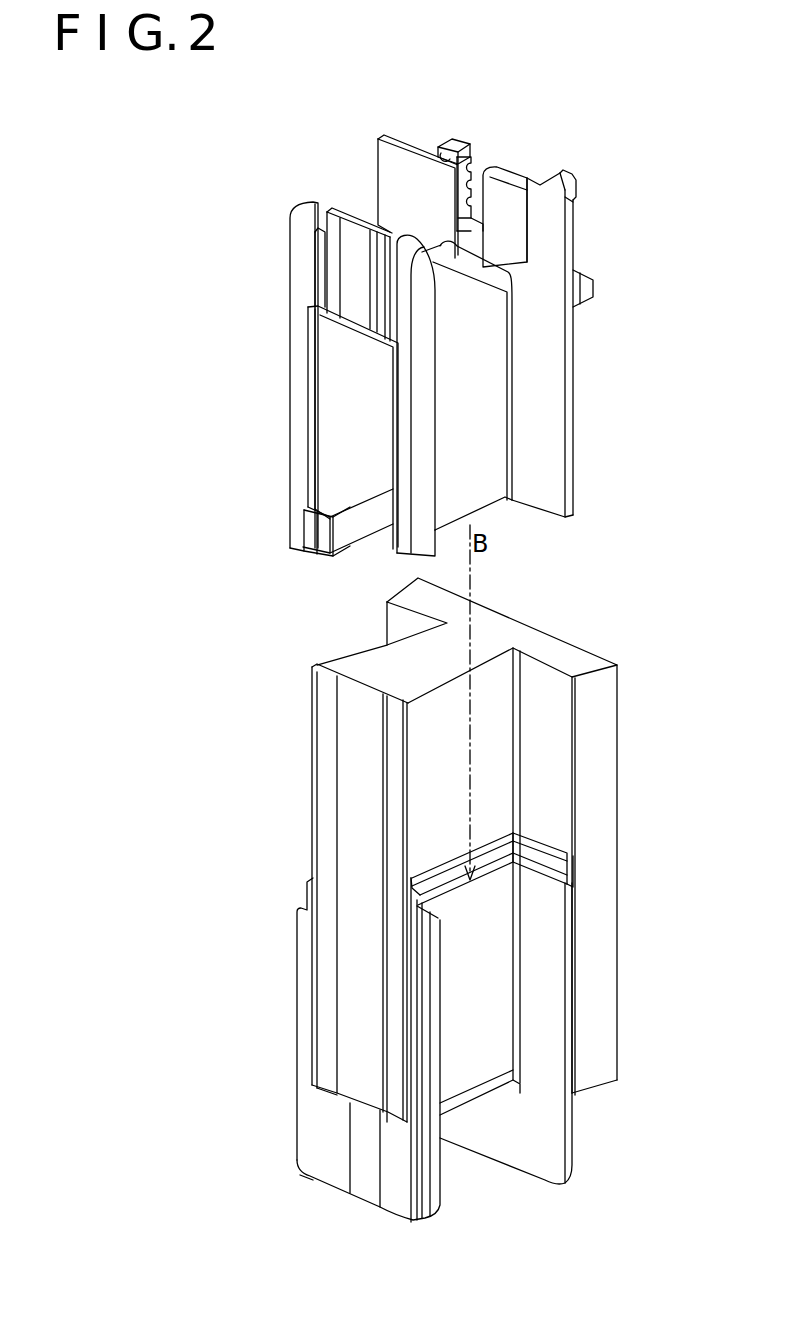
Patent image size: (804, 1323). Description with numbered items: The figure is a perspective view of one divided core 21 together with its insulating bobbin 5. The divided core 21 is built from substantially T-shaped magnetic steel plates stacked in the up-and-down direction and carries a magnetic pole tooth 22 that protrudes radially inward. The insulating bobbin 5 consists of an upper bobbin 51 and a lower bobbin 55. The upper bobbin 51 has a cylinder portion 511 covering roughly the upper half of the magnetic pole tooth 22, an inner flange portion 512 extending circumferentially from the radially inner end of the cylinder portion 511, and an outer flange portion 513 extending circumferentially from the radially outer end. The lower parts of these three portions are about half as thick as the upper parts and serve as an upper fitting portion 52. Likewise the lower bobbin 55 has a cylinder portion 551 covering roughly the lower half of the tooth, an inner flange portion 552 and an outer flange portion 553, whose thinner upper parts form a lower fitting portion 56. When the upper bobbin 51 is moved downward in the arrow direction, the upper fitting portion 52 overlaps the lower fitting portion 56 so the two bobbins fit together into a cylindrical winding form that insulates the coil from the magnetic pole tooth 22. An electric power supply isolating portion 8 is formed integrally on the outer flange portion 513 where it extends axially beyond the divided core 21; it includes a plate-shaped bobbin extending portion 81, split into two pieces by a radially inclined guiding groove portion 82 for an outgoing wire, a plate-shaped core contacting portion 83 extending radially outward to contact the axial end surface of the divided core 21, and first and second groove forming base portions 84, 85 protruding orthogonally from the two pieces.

The insulating bobbin 5 is at (275, 182).
The upper bobbin 51 is at (297, 360).
The cylinder portion 511 is at (480, 447).
The inner flange portion 512 is at (292, 448).
The outer flange portion 513 is at (542, 378).
The upper fitting portion 52 is at (550, 495).
The electric power supply isolating portion 8 is at (530, 132).
The bobbin extending portion 81 is at (392, 137).
The guiding groove portion 82 is at (478, 193).
The core contacting portion 83 is at (585, 292).
The first groove forming base portion 84 is at (557, 177).
The second groove forming base portion 85 is at (455, 137).
The divided core 21 is at (565, 647).
The magnetic pole tooth 22 is at (373, 665).
The lower fitting portion 56 is at (553, 857).
The lower bobbin 55 is at (305, 1005).
The cylinder portion 551 is at (467, 1060).
The inner flange portion 552 is at (313, 1133).
The outer flange portion 553 is at (543, 1137).